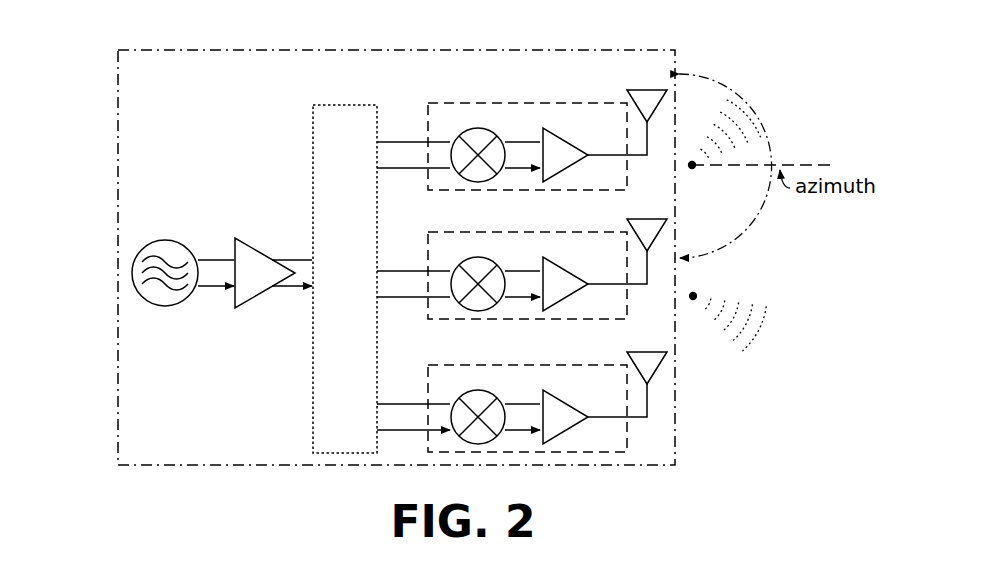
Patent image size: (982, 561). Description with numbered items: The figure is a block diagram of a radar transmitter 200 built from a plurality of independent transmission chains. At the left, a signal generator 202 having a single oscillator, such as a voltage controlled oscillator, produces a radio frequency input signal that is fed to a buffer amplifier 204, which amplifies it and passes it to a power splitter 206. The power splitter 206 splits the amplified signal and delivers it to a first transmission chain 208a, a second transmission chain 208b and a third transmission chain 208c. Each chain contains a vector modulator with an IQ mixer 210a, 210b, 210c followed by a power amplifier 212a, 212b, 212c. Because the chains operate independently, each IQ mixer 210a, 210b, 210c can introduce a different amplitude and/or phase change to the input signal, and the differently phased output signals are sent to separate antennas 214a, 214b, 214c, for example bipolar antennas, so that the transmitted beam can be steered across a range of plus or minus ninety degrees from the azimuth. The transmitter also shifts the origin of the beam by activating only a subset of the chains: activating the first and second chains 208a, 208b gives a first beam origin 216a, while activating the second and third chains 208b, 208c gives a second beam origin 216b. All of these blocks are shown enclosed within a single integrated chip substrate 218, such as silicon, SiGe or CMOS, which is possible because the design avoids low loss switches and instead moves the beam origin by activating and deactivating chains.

The radar transmitter 200 is at (380, 232).
The signal generator 202 is at (163, 306).
The buffer amplifier 204 is at (240, 308).
The power splitter 206 is at (346, 104).
The first transmission chain 208a is at (442, 102).
The second transmission chain 208b is at (442, 231).
The third transmission chain 208c is at (442, 364).
The IQ mixer 210a is at (481, 128).
The IQ mixer 210b is at (481, 257).
The IQ mixer 210c is at (481, 390).
The power amplifier 212a is at (554, 134).
The power amplifier 212b is at (554, 263).
The power amplifier 212c is at (554, 396).
The antenna 214a is at (635, 89).
The antenna 214b is at (635, 218).
The antenna 214c is at (635, 351).
The first location of the origin of the transmitted radar beam 216a is at (698, 172).
The second location of the origin of the transmitted radar beam 216b is at (699, 290).
The single integrated chip substrate 218 is at (118, 22).